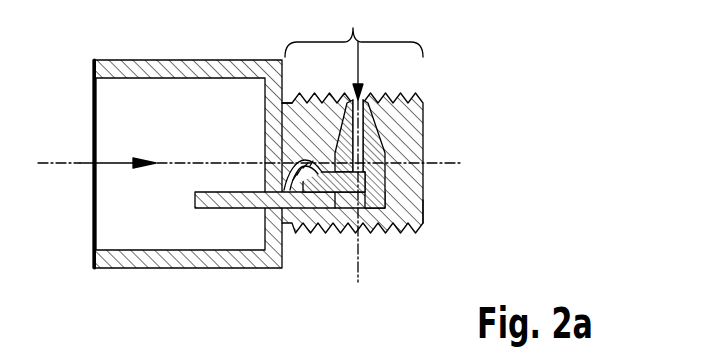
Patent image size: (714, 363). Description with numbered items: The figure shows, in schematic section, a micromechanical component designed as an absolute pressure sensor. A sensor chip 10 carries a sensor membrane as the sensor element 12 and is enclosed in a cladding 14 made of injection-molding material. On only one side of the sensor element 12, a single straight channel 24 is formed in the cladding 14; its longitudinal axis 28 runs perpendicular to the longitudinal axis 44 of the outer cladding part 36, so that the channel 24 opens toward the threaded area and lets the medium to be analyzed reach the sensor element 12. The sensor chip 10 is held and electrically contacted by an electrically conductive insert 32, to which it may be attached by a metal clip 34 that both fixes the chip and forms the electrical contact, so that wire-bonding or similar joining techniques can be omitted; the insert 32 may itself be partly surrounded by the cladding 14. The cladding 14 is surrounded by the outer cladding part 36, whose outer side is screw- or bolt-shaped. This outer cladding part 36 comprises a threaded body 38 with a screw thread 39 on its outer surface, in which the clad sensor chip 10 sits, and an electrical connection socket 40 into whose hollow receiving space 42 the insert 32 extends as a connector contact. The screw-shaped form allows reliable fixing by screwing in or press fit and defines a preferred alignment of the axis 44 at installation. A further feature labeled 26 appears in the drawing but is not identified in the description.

The sensor chip 10 is at (340, 235).
The sensor element 12 is at (386, 175).
The cladding 14 is at (376, 129).
The channel 24 is at (366, 72).
The inlet region 26 is at (335, 80).
The longitudinal axis of channel 28 is at (366, 268).
The electrically conductive insert 32 is at (302, 234).
The metal clip 34 is at (283, 170).
The outer cladding part 36 is at (268, 255).
The threaded body 38 is at (354, 28).
The screw thread 39 is at (417, 232).
The electrical connection socket 40 is at (283, 60).
The hollow receiving space 42 is at (110, 163).
The longitudinal axis of outer cladding part 44 is at (44, 168).